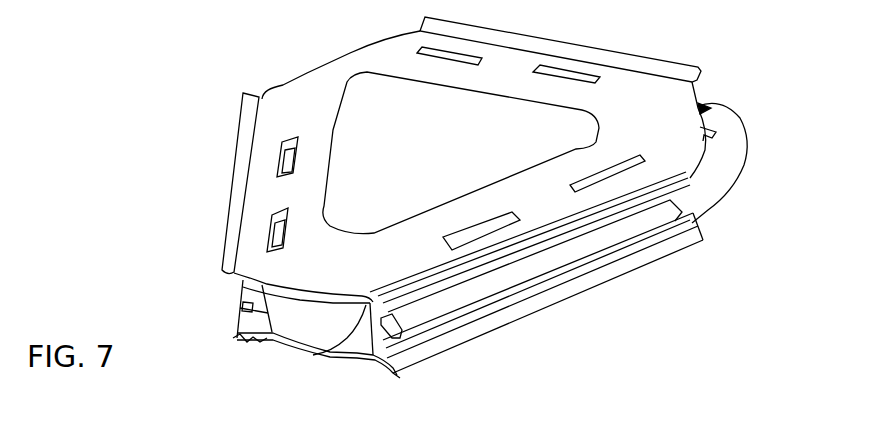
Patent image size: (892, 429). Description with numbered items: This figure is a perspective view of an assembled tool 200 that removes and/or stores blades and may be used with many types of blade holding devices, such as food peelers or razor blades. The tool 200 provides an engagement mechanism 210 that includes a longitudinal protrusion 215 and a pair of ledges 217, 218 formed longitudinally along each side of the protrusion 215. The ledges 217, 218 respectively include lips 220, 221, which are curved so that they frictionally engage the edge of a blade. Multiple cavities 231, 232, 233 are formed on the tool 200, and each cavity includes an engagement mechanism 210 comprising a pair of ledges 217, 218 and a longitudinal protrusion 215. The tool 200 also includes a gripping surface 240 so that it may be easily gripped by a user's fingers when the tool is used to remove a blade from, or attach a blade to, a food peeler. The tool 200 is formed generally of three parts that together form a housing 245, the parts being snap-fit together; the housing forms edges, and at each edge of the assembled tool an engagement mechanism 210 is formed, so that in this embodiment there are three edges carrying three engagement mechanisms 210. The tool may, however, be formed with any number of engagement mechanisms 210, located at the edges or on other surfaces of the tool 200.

The tool 200 is at (84, 166).
The engagement mechanism 210 is at (126, 233).
The longitudinal protrusion 215 is at (247, 303).
The ledge 217 is at (247, 162).
The ledge 218 is at (387, 365).
The lip 220 is at (240, 333).
The lip 221 is at (213, 277).
The cavity 231 is at (665, 253).
The cavity 232 is at (557, 42).
The cavity 233 is at (236, 148).
The gripping surface 240 is at (367, 123).
The housing 245 is at (320, 322).